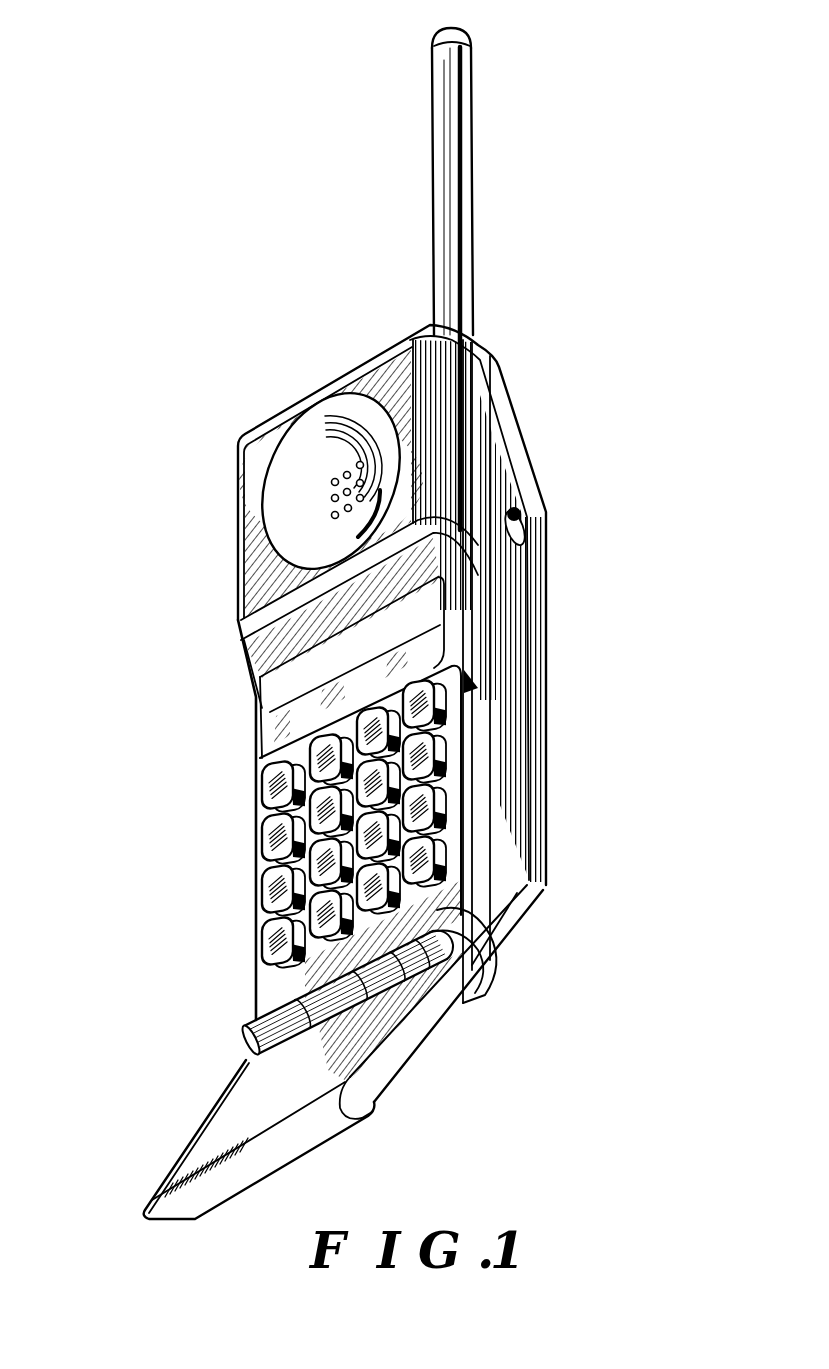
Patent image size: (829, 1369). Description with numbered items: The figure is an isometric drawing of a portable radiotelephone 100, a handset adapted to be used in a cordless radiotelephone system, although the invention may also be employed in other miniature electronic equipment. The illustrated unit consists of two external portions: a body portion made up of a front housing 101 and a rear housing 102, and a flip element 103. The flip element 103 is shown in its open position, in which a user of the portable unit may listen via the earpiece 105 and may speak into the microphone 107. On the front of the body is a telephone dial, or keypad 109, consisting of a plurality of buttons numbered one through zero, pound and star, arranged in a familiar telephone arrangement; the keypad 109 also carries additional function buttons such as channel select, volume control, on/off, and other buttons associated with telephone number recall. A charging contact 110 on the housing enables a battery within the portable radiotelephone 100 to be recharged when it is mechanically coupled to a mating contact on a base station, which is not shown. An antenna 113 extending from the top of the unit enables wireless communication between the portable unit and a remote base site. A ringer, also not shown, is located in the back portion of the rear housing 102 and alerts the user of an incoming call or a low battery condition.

The portable radiotelephone 100 is at (299, 211).
The front housing 101 is at (240, 447).
The rear housing 102 is at (532, 488).
The flip element 103 is at (225, 1120).
The earpiece 105 is at (285, 497).
The microphone 107 is at (275, 993).
The keypad 109 is at (262, 840).
The charging contact 110 is at (523, 553).
The antenna 113 is at (465, 190).